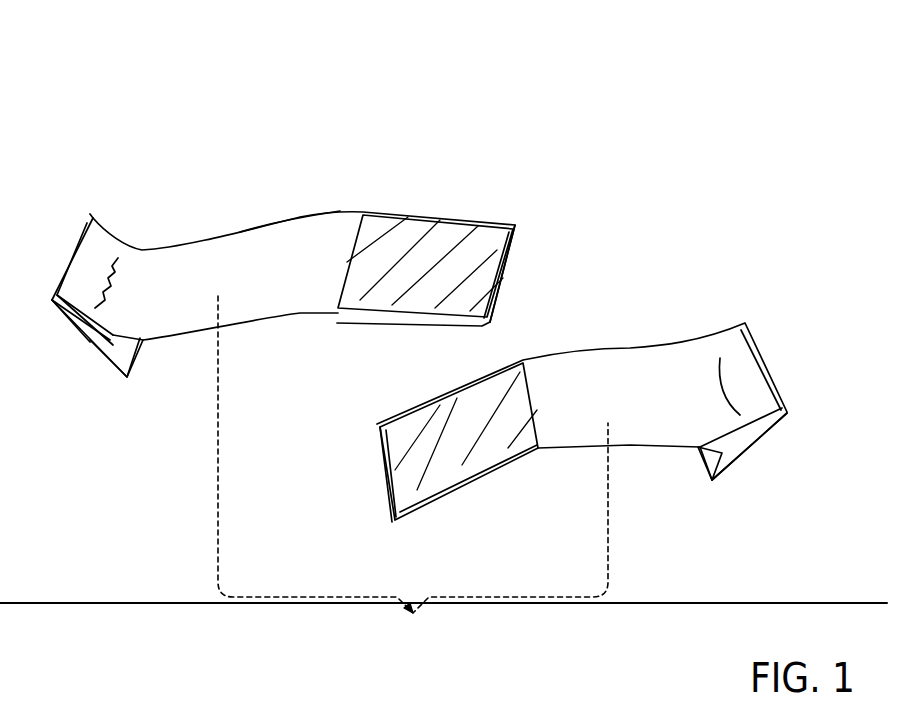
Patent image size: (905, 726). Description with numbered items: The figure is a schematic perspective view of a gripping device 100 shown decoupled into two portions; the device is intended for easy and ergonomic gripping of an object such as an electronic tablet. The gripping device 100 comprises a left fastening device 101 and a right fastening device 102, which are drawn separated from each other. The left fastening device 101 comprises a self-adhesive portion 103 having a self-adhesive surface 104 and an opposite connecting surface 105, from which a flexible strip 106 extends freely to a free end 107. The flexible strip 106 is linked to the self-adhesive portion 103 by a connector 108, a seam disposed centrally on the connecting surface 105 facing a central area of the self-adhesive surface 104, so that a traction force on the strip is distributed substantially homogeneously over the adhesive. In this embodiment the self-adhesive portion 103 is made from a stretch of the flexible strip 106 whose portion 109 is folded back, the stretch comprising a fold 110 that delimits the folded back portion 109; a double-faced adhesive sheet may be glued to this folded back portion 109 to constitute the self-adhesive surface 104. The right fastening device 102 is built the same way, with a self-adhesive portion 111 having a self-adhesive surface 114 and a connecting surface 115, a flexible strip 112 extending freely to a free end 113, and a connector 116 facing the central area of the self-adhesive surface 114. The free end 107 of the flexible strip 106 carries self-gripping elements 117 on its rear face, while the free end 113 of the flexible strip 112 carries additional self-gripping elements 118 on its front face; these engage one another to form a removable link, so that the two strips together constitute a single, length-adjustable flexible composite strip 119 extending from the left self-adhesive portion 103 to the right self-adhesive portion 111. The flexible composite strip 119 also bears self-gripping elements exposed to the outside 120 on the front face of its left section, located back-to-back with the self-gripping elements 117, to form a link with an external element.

The gripping device 100 is at (157, 58).
The left fastening device 101 is at (303, 276).
The right fastening device 102 is at (583, 392).
The self-adhesive portion 103 is at (124, 371).
The self-adhesive surface 104 is at (72, 333).
The connecting surface 105 is at (120, 350).
The flexible strip 106 is at (308, 189).
The free end 107 is at (523, 238).
The connector 108 is at (82, 232).
The folded back portion 109 is at (85, 371).
The fold 110 is at (123, 257).
The self-adhesive portion 111 is at (720, 478).
The flexible strip 112 is at (651, 469).
The free end 113 is at (383, 485).
The self-adhesive surface 114 is at (755, 450).
The connecting surface 115 is at (720, 452).
The connector 116 is at (772, 353).
The self-gripping elements 117 is at (337, 323).
The additional self-gripping elements 118 is at (459, 436).
The flexible composite strip 119 is at (413, 474).
The self-gripping elements exposed to the outside 120 is at (425, 237).